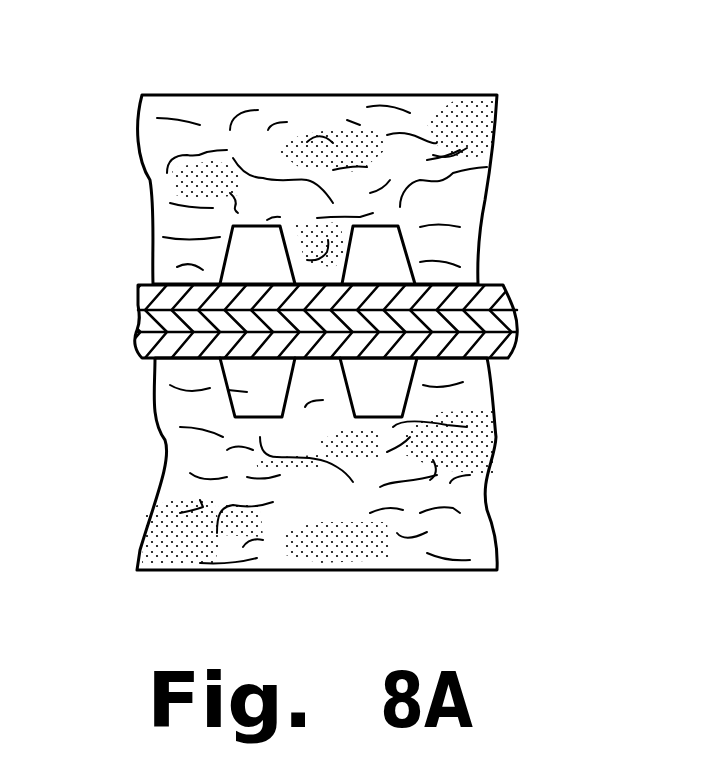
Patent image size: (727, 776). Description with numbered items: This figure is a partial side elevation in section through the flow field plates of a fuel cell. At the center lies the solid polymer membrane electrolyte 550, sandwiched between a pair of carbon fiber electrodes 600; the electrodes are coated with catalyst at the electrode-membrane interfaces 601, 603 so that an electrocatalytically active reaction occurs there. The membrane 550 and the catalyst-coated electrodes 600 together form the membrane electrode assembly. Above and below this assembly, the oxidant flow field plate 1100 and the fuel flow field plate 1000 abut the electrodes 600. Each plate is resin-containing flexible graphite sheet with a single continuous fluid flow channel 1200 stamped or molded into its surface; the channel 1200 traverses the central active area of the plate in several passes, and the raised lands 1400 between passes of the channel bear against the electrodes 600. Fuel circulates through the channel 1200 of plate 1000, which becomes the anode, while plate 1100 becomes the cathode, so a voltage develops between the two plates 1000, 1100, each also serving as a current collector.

The oxidant flow field plate 1100 is at (335, 95).
The fuel flow field plate 1000 is at (273, 570).
The raised features of first substrate 1400 is at (238, 267).
The fluid flow channel 1200 is at (215, 390).
The carbon fiber electrode 600 is at (492, 285).
The solid polymer membrane electrolyte 550 is at (517, 323).
The electrode-membrane interface 601 is at (138, 310).
The electrode-membrane interface 603 is at (138, 335).